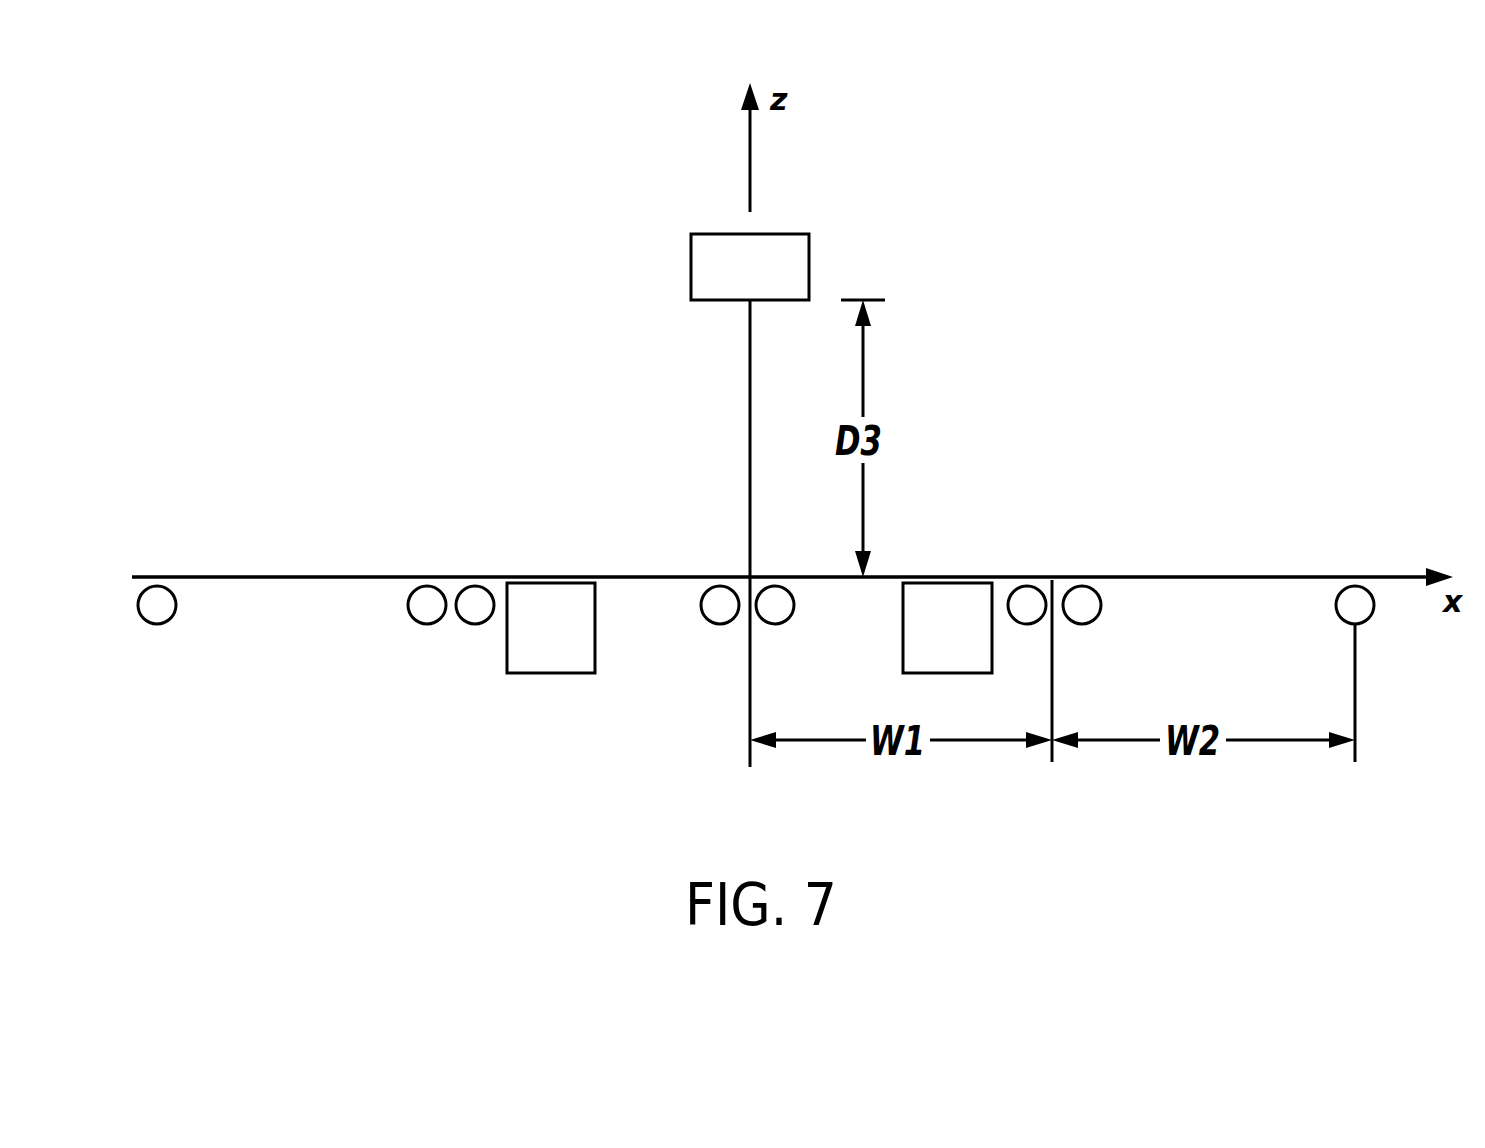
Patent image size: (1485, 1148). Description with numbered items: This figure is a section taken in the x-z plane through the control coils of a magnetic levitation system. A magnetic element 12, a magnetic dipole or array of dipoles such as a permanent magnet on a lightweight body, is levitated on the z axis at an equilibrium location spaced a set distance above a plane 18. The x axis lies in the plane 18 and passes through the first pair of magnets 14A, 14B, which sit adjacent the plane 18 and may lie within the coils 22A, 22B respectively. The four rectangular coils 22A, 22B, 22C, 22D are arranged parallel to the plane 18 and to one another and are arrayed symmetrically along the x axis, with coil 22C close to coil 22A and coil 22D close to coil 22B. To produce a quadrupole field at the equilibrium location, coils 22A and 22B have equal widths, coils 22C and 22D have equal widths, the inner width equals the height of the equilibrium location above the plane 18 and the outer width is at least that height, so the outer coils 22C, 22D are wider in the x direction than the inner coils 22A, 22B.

The magnetic element 12 is at (691, 262).
The first magnet of the first pair 14A is at (950, 673).
The second magnet of the first pair 14B is at (547, 673).
The plane 18 is at (277, 577).
The first control coil 22A is at (781, 623).
The second control coil 22B is at (716, 621).
The third control coil 22C is at (1338, 614).
The fourth control coil 22D is at (157, 624).